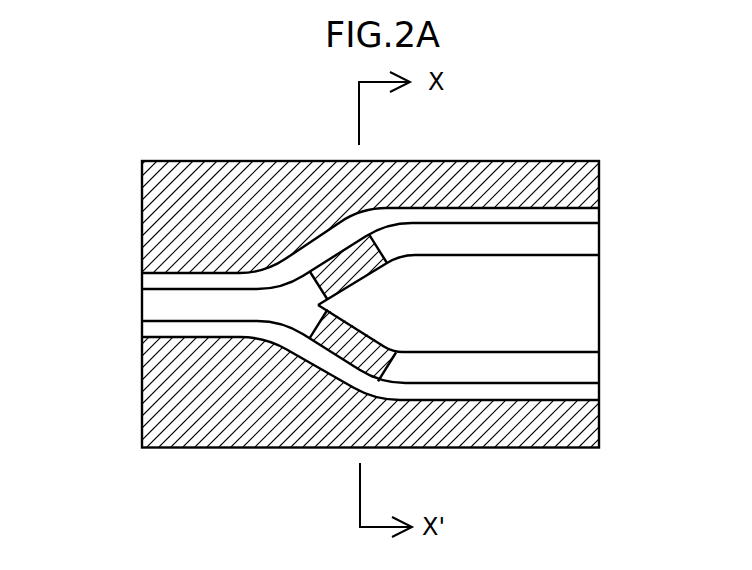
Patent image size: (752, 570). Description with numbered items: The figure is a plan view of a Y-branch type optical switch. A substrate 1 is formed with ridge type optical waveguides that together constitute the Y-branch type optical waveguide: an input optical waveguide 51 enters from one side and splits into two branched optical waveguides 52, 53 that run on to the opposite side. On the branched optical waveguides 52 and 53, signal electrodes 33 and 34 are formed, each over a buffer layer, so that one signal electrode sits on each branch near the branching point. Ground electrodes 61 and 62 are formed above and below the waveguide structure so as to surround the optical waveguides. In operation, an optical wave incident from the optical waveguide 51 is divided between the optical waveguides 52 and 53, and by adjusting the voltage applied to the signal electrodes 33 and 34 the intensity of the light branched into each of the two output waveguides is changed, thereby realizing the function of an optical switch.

The substrate 1 is at (568, 303).
The ground electrode 61 is at (213, 200).
The ground electrode 62 is at (200, 400).
The optical waveguide 51 is at (173, 303).
The branched optical waveguide 52 is at (568, 240).
The branched optical waveguide 53 is at (568, 367).
The signal electrode 33 is at (360, 257).
The signal electrode 34 is at (383, 348).